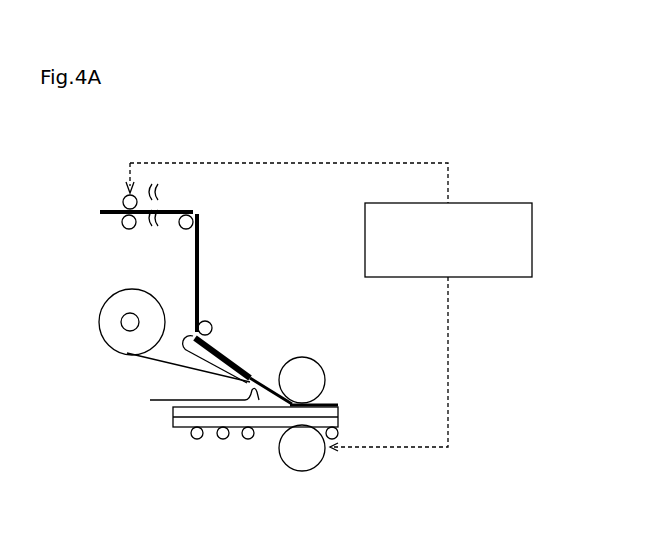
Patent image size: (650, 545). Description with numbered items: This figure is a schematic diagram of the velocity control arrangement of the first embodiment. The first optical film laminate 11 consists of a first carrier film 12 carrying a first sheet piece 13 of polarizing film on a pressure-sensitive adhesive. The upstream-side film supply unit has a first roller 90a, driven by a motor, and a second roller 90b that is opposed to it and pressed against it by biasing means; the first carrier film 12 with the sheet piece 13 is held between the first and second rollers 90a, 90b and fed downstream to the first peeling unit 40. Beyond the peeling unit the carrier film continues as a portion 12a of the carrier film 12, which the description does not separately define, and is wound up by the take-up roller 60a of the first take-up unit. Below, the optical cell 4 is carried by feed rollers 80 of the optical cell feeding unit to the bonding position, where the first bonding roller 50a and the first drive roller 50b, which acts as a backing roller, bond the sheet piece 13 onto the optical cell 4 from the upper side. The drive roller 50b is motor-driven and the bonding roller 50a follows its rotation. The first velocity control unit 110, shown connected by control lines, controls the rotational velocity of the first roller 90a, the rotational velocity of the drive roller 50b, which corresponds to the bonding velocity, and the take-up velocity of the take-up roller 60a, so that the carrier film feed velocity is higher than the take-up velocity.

The first velocity control unit 110 is at (365, 222).
The first roller 90a is at (123, 202).
The second roller 90b is at (125, 228).
The first optical film laminate 11 is at (198, 306).
The take-up roller 60a is at (121, 318).
The first carrier film 12 is at (158, 360).
The transfer sheet portion 12a is at (150, 400).
The first peeling unit 40 is at (192, 350).
The first sheet piece 13 is at (269, 380).
The optical cell 4 is at (163, 426).
The first bonding roller 50a is at (308, 357).
The first drive roller 50b is at (305, 464).
The feed rollers 80 is at (257, 445).